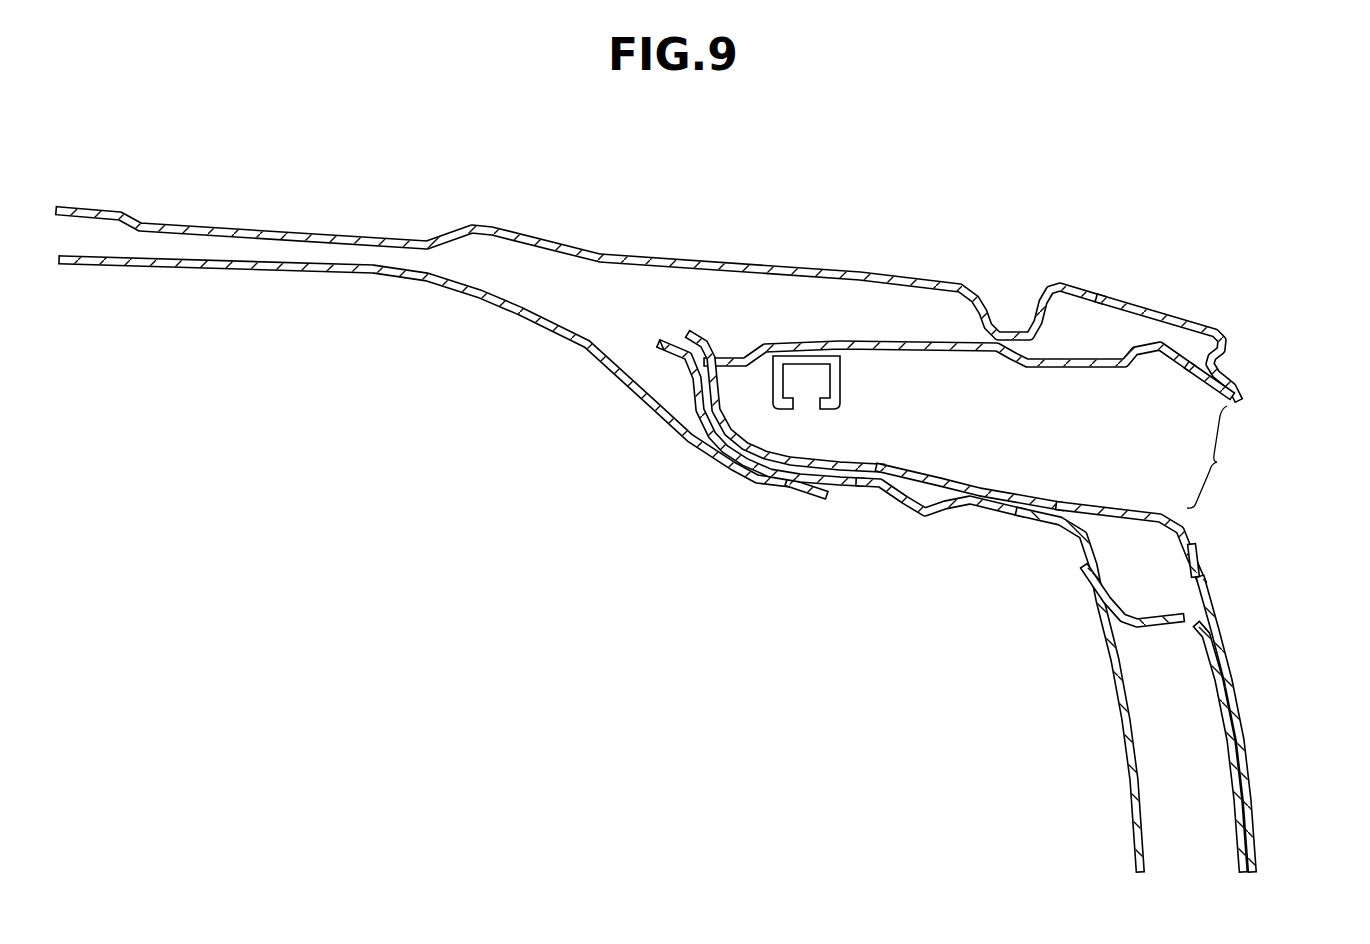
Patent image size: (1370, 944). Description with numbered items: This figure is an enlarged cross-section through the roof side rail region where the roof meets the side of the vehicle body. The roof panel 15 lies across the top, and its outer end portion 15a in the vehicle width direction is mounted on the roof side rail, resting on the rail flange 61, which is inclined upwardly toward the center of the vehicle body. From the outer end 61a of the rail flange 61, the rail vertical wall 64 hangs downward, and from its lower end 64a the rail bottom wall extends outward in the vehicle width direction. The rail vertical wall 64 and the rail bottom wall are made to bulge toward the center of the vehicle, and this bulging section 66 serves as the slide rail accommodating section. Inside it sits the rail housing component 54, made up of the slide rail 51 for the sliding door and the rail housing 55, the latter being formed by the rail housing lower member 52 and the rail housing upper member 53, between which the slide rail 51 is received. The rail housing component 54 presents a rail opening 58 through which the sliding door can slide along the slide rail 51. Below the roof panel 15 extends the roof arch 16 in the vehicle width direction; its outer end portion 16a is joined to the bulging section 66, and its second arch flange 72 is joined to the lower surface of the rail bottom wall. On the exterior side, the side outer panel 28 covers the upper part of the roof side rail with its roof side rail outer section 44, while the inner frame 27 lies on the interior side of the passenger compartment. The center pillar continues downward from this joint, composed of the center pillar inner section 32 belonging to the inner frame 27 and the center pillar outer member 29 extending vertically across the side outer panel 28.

The roof panel 15 is at (262, 197).
The outer end portion 15a is at (1244, 400).
The roof arch 16 is at (268, 286).
The outer end portion 16a is at (830, 500).
The inner frame 27 is at (1220, 700).
The side outer panel 28 is at (1185, 292).
The center pillar outer member 29 is at (1194, 690).
The center pillar inner section 32 is at (1138, 745).
The roof side rail outer section 44 is at (1125, 295).
The slide rail 51 is at (790, 385).
The rail housing lower member 52 is at (870, 465).
The rail housing upper member 53 is at (880, 340).
The rail housing component 54 is at (985, 177).
The rail housing 55 is at (1017, 215).
The rail opening 58 is at (1217, 462).
The rail flange 61 is at (690, 332).
The outer end 61a is at (675, 358).
The rail vertical wall 64 is at (688, 398).
The lower end 64a is at (727, 474).
The bulging section 66 is at (990, 496).
The second arch flange 72 is at (756, 492).